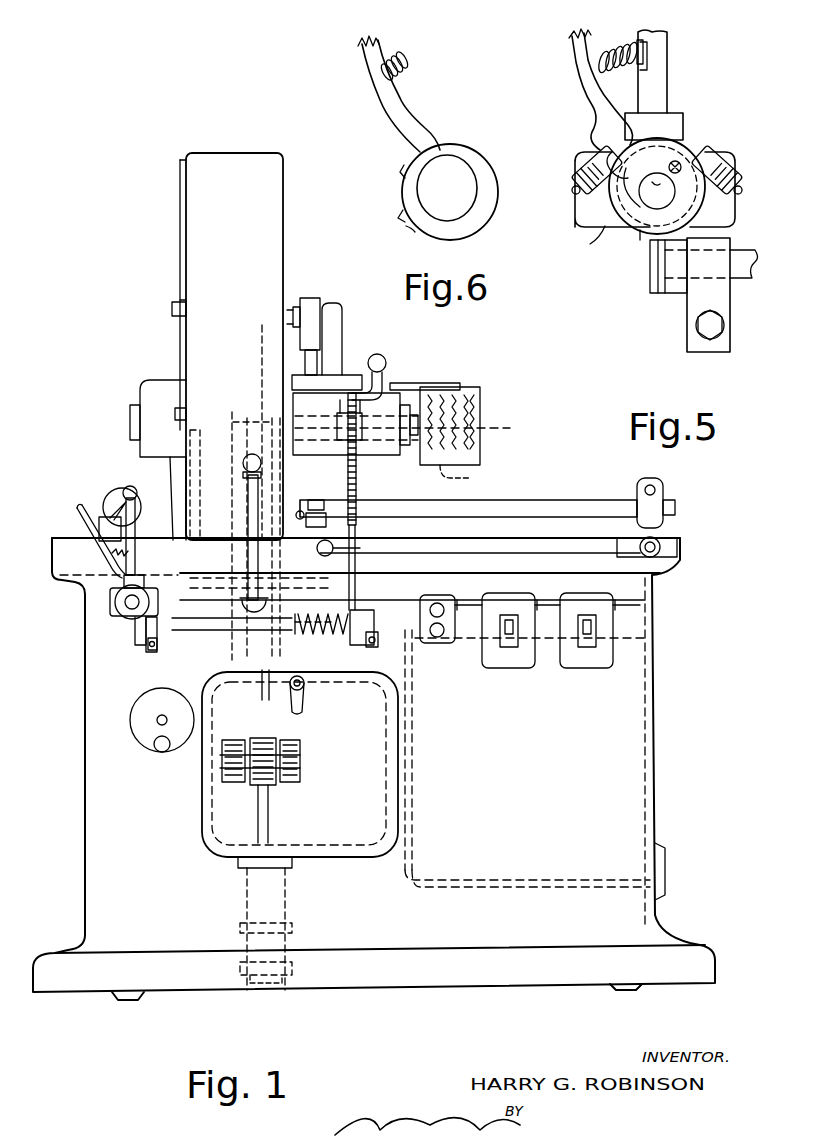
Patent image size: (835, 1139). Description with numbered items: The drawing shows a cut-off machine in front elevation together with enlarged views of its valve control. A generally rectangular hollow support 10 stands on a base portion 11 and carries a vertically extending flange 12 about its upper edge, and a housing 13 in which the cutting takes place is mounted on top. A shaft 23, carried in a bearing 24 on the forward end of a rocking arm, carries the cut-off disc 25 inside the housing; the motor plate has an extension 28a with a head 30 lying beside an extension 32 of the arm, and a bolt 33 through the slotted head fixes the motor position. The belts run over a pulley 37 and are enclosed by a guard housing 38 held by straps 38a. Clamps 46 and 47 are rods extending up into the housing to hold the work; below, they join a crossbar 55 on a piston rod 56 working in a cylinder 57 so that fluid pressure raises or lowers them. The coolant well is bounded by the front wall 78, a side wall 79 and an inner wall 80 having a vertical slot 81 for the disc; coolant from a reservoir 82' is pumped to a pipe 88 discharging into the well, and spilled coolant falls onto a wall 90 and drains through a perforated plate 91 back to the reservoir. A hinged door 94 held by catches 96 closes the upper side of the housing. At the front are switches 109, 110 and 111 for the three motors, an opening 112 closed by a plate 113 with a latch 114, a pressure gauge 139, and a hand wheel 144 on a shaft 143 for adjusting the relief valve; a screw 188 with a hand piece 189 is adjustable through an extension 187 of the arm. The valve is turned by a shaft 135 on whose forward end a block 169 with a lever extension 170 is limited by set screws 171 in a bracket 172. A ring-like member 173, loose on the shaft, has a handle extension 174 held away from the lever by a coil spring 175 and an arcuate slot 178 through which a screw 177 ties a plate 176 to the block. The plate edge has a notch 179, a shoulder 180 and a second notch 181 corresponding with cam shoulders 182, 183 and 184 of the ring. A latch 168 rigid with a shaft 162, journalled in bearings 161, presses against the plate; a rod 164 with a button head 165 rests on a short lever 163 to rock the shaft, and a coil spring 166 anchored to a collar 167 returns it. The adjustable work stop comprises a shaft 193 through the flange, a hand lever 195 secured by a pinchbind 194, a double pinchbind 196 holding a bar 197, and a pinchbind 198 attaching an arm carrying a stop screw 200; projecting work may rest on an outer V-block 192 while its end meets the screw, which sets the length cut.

In FIG. 1, the support 10 is at (72, 773).
In FIG. 1, the base portion 11 is at (677, 921).
In FIG. 1, the flange 12 is at (60, 540).
In FIG. 1, the housing 13 is at (172, 206).
In FIG. 1, the shaft 23 is at (413, 428).
In FIG. 1, the bearing 24 is at (390, 452).
In FIG. 1, the cut-off disc 25 is at (258, 333).
In FIG. 1, the extension 28a is at (316, 360).
In FIG. 1, the head-like portion 30 is at (312, 300).
In FIG. 1, the extension 32 is at (338, 306).
In FIG. 1, the bolt 33 is at (292, 307).
In FIG. 1, the pulley 37 is at (464, 476).
In FIG. 1, the guard housing 38 is at (465, 385).
In FIG. 1, the straps 38a is at (405, 382).
In FIG. 1, the clamp 46 is at (282, 643).
In FIG. 1, the clamp 47 is at (222, 640).
In FIG. 1, the crossbar 55 is at (245, 778).
In FIG. 1, the piston rod 56 is at (270, 808).
In FIG. 1, the cylinder 57 is at (280, 912).
In FIG. 1, the front wall 78 is at (280, 205).
In FIG. 1, the side wall 79 is at (228, 418).
In FIG. 1, the inner wall 80 is at (247, 418).
In FIG. 1, the vertical slot 81 is at (276, 416).
In FIG. 1, the liquid coolant reservoir 82' is at (559, 821).
In FIG. 1, the pipe 88 is at (240, 585).
In FIG. 1, the wall 90 is at (355, 588).
In FIG. 1, the removable perforated plate 91 is at (660, 625).
In FIG. 1, the door 94 is at (180, 238).
In FIG. 1, the catches 96 is at (172, 309).
In FIG. 1, the switch 109 is at (426, 643).
In FIG. 1, the switch 110 is at (512, 668).
In FIG. 1, the switch 111 is at (585, 668).
In FIG. 1, the opening 112 is at (210, 848).
In FIG. 1, the plate 113 is at (352, 840).
In FIG. 1, the latch 114 is at (305, 700).
In FIG. 1, the shaft 135 is at (118, 610).
In FIG. 5, the shaft 135 is at (657, 191).
In FIG. 1, the pressure gauge 139 is at (128, 486).
In FIG. 1, the shaft 143 is at (175, 708).
In FIG. 1, the hand wheel 144 is at (136, 700).
In FIG. 1, the bearings 161 is at (146, 650).
In FIG. 5, the bearings 161 is at (703, 348).
In FIG. 1, the shaft 162 is at (175, 640).
In FIG. 5, the shaft 162 is at (738, 278).
In FIG. 1, the short lever 163 is at (356, 642).
In FIG. 1, the vertically movable rod 164 is at (368, 598).
In FIG. 1, the button-like head 165 is at (360, 530).
In FIG. 1, the coil spring 166 is at (310, 632).
In FIG. 1, the collar 167 is at (295, 670).
In FIG. 1, the latch member 168 is at (133, 638).
In FIG. 5, the latch member 168 is at (652, 278).
In FIG. 1, the block 169 is at (145, 576).
In FIG. 5, the block 169 is at (677, 116).
In FIG. 1, the handle extension 170 is at (135, 545).
In FIG. 5, the handle extension 170 is at (662, 72).
In FIG. 1, the set screws 171 is at (115, 600).
In FIG. 5, the set screws 171 is at (572, 180).
In FIG. 5, the bracket 172 is at (583, 215).
In FIG. 6, the ring-like member 173 is at (485, 222).
In FIG. 5, the ring-like member 173 is at (602, 186).
In FIG. 1, the handle extension 174 is at (78, 515).
In FIG. 6, the handle extension 174 is at (382, 90).
In FIG. 5, the handle extension 174 is at (575, 50).
In FIG. 1, the coil spring 175 is at (110, 555).
In FIG. 6, the coil spring 175 is at (406, 72).
In FIG. 5, the coil spring 175 is at (625, 50).
In FIG. 1, the plate 176 is at (150, 600).
In FIG. 5, the plate 176 is at (607, 165).
In FIG. 5, the screw 177 is at (669, 166).
In FIG. 6, the arcuate slot 178 is at (455, 168).
In FIG. 5, the notch 179 is at (635, 245).
In FIG. 5, the shoulder 180 is at (600, 240).
In FIG. 5, the second notch 181 is at (642, 194).
In FIG. 6, the cam shoulder 182 is at (410, 232).
In FIG. 6, the cam shoulder 183 is at (400, 218).
In FIG. 6, the cam shoulder 184 is at (400, 170).
In FIG. 1, the extension 187 is at (340, 418).
In FIG. 1, the screw 188 is at (356, 478).
In FIG. 1, the hand piece 189 is at (384, 364).
In FIG. 1, the outer V-block 192 is at (103, 517).
In FIG. 1, the shaft 193 is at (662, 549).
In FIG. 1, the pinchbind 194 is at (670, 545).
In FIG. 1, the hand lever 195 is at (458, 550).
In FIG. 1, the double pinchbind 196 is at (645, 480).
In FIG. 1, the bar 197 is at (523, 500).
In FIG. 1, the pinchbind 198 is at (322, 500).
In FIG. 1, the stop screw 200 is at (310, 510).